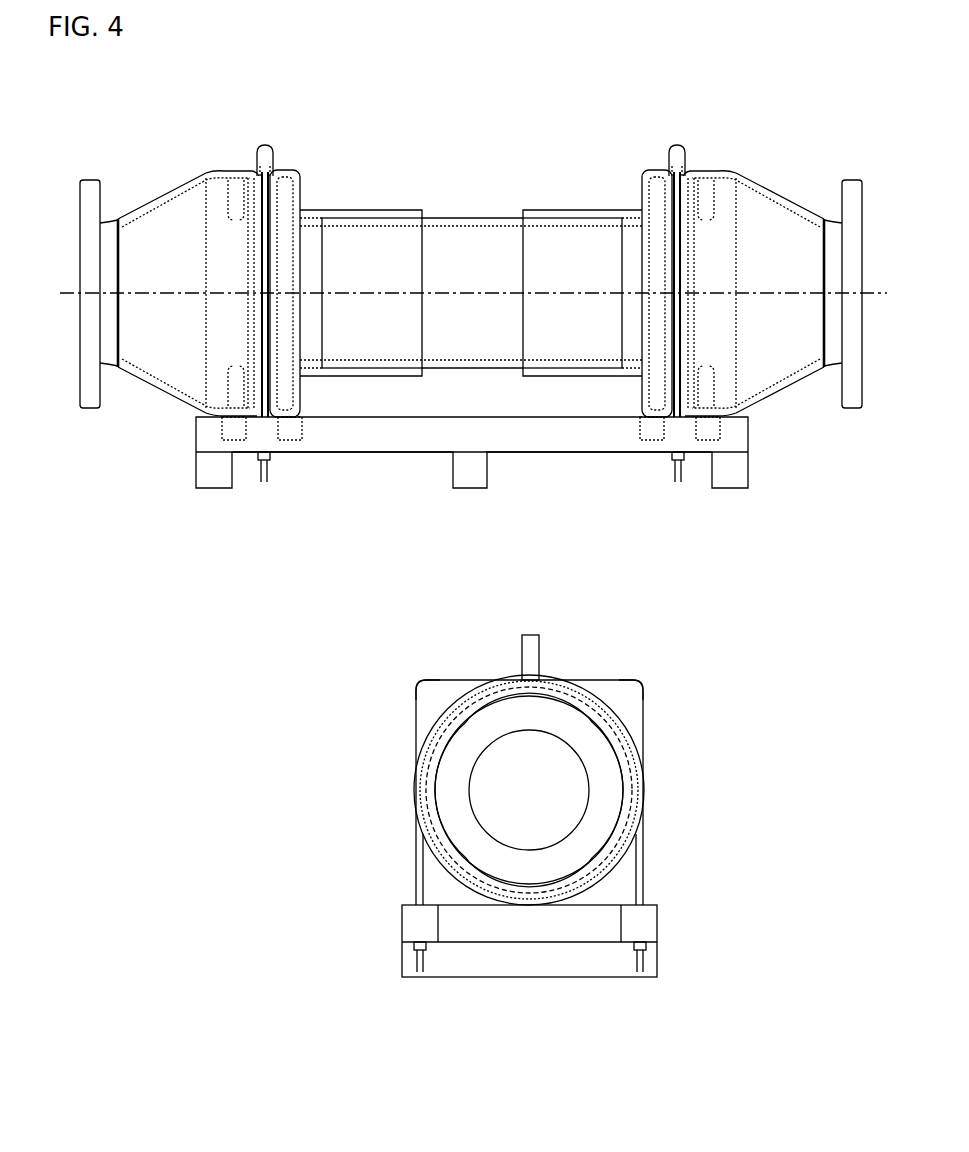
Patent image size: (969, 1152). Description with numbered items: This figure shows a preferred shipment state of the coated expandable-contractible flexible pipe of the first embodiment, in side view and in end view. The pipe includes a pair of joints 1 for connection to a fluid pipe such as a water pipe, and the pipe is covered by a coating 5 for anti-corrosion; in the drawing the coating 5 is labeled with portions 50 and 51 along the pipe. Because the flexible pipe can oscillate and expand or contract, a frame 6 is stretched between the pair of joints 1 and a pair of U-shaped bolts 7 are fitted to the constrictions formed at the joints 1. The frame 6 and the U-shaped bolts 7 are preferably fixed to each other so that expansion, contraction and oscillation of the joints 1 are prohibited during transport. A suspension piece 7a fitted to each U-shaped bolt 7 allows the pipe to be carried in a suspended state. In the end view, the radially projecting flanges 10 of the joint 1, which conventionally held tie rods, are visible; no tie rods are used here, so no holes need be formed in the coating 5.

The joint 1 is at (200, 162).
The coating 5 is at (575, 80).
The ring portion 50 is at (300, 168).
The cylindrical portion 51 is at (478, 214).
The frame 6 is at (398, 446).
The U-shaped bolt 7 is at (268, 384).
The suspension piece 7a is at (279, 156).
The flange 10 is at (442, 683).